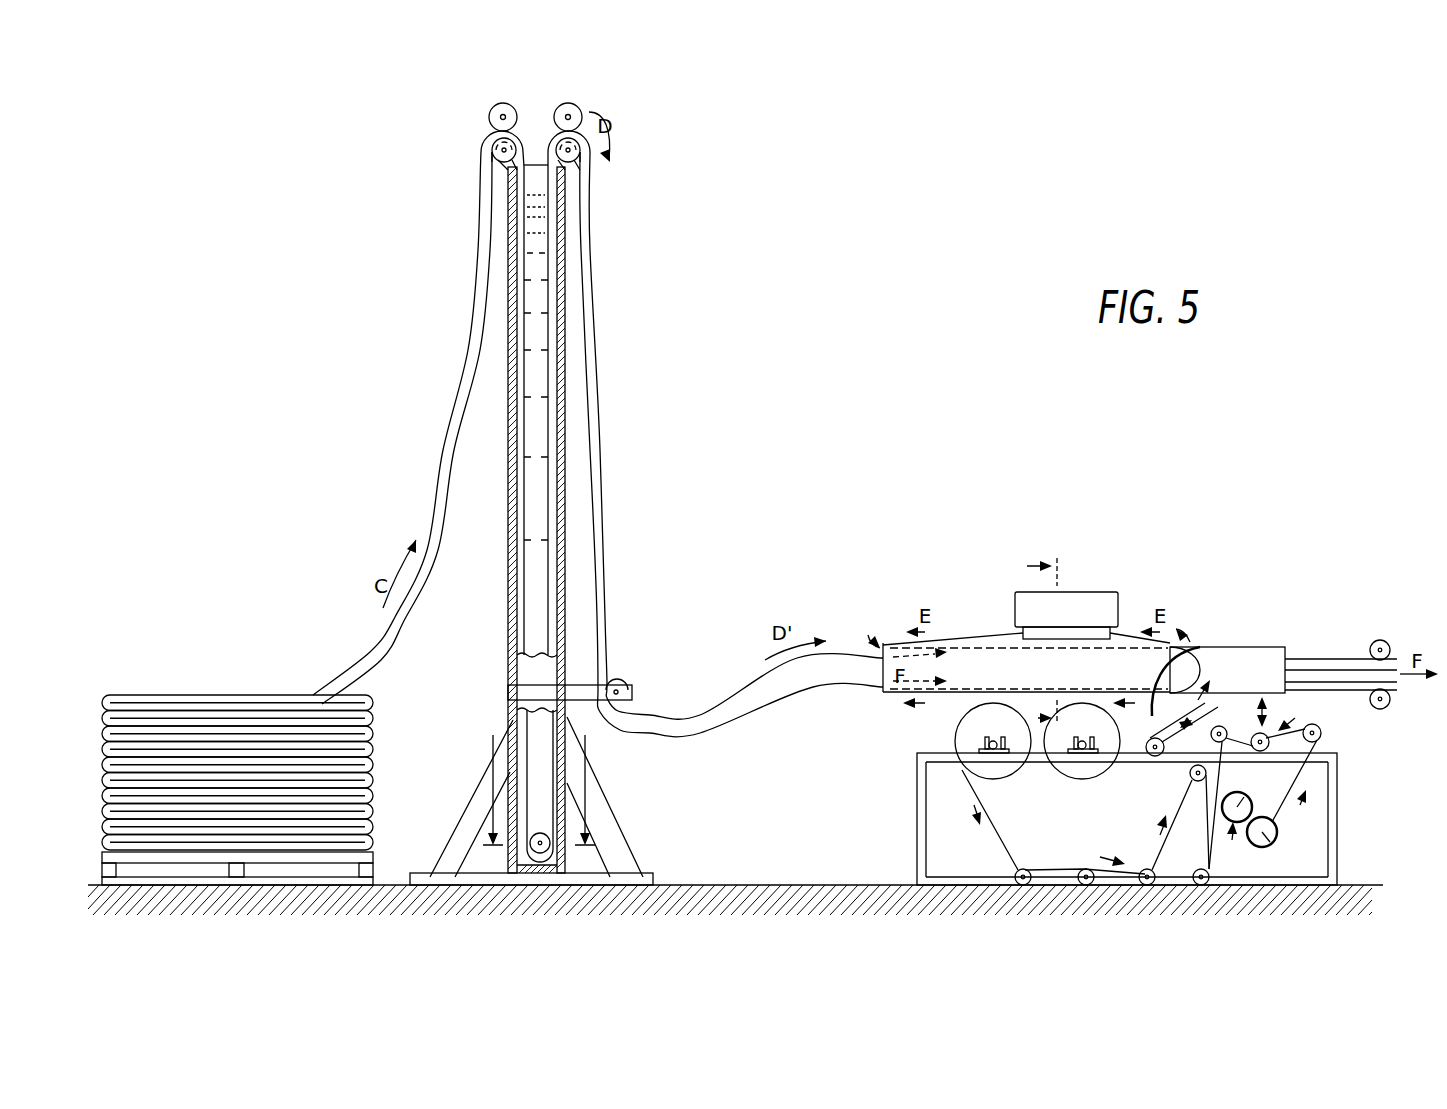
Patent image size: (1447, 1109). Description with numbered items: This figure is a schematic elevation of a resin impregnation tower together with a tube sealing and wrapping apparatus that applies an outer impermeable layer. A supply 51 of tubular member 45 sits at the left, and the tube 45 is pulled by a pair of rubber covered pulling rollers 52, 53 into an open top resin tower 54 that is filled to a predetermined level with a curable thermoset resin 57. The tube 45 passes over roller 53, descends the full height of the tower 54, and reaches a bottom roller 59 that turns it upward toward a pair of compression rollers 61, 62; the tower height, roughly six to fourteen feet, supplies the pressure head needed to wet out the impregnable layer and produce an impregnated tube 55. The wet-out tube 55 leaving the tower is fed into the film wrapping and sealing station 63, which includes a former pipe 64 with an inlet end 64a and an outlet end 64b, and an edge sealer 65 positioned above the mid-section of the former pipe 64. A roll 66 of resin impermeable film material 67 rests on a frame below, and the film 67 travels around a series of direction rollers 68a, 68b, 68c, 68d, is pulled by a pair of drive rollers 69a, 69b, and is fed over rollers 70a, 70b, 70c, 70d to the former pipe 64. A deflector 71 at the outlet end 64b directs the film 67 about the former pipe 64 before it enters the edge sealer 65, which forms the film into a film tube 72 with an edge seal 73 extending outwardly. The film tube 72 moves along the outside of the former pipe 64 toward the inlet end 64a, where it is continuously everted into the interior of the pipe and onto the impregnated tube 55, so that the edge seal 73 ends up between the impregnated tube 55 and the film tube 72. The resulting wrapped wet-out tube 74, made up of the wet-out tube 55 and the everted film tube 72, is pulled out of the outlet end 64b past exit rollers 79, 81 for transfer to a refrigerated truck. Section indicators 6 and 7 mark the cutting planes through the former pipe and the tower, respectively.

The tubular member 45 is at (330, 688).
The supply 51 is at (148, 676).
The pulling roller 52 is at (492, 105).
The pulling roller 53 is at (497, 157).
The resin tower 54 is at (565, 325).
The impregnated tube 55 is at (598, 485).
The curable thermoset resin 57 is at (538, 243).
The bottom roller 59 is at (542, 836).
The compression roller 61 is at (565, 176).
The compression roller 62 is at (577, 105).
The film wrapping and sealing station 63 is at (946, 606).
The former pipe 64 is at (1024, 684).
The inlet end 64a is at (884, 692).
The outlet end 64b is at (1250, 655).
The edge sealer 65 is at (1100, 607).
The roll 66 is at (970, 748).
The resin impermeable film material 67 is at (1000, 840).
The direction roller 68a is at (1023, 885).
The direction roller 68b is at (1086, 885).
The direction roller 68c is at (1147, 885).
The direction roller 68d is at (1190, 773).
The drive roller 69a is at (1250, 797).
The drive roller 69b is at (1275, 845).
The roller 70a is at (1322, 733).
The roller 70b is at (1257, 751).
The roller 70c is at (1219, 725).
The roller 70d is at (1152, 740).
The deflector 71 is at (1158, 690).
The film tube 72 is at (980, 642).
The edge seal 73 is at (997, 640).
The wrapped wet-out tube 74 is at (1328, 665).
The exit roller 79 is at (1387, 708).
The exit roller 81 is at (1382, 640).
The section line 6- 6 is at (1034, 639).
The section line 7- 7 is at (539, 778).